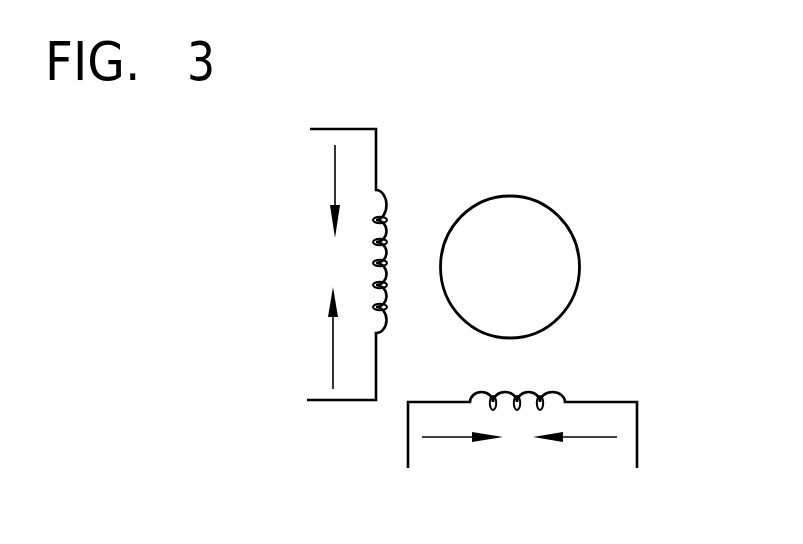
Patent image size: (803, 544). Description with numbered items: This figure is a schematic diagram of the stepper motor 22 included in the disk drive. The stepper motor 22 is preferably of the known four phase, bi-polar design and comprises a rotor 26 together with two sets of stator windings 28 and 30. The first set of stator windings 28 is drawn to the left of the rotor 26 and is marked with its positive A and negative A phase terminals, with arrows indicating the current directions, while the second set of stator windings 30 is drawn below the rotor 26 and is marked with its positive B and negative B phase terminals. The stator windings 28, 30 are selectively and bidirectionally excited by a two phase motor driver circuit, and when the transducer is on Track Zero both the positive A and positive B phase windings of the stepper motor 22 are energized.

The stepper motor 22 is at (616, 124).
The rotor 26 is at (585, 186).
The stator windings 28 is at (425, 172).
The stator windings 30 is at (580, 366).